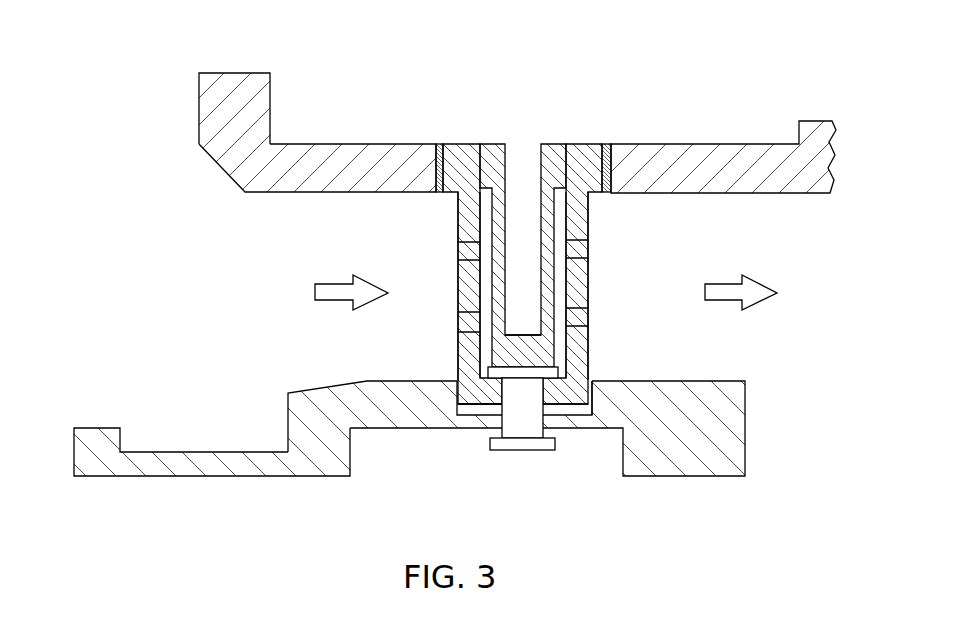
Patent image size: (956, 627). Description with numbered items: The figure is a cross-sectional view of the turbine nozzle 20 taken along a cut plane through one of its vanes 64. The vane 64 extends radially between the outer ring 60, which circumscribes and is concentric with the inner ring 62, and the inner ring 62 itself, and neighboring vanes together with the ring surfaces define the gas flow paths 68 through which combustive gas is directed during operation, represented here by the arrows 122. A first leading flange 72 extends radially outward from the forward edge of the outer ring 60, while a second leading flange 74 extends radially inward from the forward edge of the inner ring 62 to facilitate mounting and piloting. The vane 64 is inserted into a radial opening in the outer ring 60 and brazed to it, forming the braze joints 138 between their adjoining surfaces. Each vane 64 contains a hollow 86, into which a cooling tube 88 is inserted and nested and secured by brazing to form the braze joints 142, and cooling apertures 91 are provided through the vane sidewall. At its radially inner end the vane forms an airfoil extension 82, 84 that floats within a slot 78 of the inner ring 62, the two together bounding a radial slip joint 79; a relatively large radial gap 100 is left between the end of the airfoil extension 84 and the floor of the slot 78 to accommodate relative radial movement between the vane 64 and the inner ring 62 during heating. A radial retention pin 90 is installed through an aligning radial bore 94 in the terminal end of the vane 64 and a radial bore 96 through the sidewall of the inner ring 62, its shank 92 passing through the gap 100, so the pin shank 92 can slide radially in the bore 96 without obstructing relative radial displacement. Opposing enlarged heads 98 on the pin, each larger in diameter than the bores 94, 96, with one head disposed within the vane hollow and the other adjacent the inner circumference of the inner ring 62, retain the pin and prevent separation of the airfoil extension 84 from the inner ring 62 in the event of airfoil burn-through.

The turbine nozzle 20 is at (168, 150).
The outer ring 60 is at (729, 142).
The inner ring 62 is at (750, 426).
The vane 64 is at (541, 256).
The gas flow path 68 is at (389, 225).
The first leading flange 72 is at (272, 102).
The second leading flange 74 is at (95, 428).
The slot 78 is at (594, 392).
The radial slip joint 79 is at (598, 378).
The airfoil extension 82 is at (459, 222).
The airfoil extension 84 is at (461, 395).
The hollow 86 is at (568, 209).
The cooling tube 88 is at (493, 150).
The radial retention pin 90 is at (503, 455).
The cooling apertures 91 is at (459, 251).
The radial retention pin shank 92 is at (536, 415).
The radial bore 94 is at (549, 396).
The radial bore 96 is at (548, 428).
The enlarged head 98 is at (518, 368).
The radial gap 100 is at (472, 413).
The arrows 122 is at (336, 284).
The braze joint 138 is at (440, 163).
The braze joint 142 is at (470, 162).